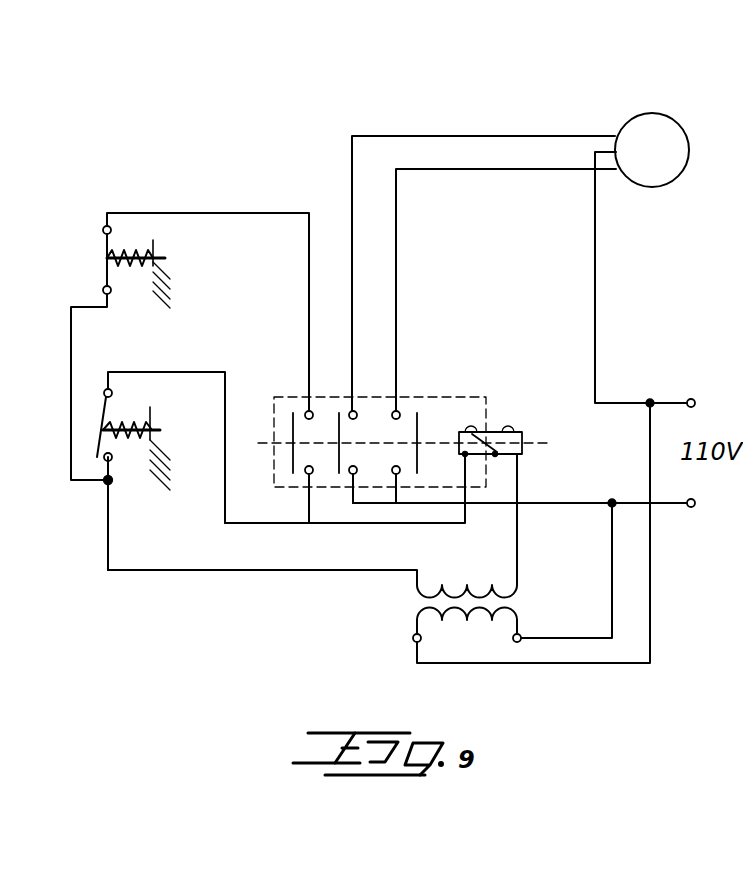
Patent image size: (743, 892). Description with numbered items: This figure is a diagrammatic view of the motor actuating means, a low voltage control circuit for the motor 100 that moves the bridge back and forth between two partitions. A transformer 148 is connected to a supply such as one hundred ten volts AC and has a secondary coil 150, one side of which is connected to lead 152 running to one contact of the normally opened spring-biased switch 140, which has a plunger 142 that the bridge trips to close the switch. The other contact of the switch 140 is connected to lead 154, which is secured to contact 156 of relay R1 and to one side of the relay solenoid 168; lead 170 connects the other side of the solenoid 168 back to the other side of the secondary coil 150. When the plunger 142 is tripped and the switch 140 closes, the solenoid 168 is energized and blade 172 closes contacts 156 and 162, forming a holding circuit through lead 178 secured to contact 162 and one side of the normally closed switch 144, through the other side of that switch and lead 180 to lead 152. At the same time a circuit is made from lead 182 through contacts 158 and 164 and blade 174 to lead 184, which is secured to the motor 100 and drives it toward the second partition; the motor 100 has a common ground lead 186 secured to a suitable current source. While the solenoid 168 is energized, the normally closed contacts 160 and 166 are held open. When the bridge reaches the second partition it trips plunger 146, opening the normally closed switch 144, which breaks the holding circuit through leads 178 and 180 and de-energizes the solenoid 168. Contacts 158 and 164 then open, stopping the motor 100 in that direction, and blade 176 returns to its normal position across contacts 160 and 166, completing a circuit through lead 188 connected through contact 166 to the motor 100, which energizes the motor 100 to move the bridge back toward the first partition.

The motor 100 is at (652, 122).
The normally opened spring-biased switch 140 is at (100, 422).
The plunger 142 is at (150, 430).
The normally closed switch 144 is at (107, 242).
The plunger 146 is at (160, 258).
The transformer 148 is at (521, 607).
The secondary coil 150 is at (492, 590).
The lead 152 is at (222, 571).
The lead 154 is at (240, 525).
The contact 156 is at (312, 473).
The contact 158 is at (356, 473).
The contact 160 is at (399, 473).
The contact 162 is at (311, 412).
The contact 164 is at (355, 412).
The contact 166 is at (398, 412).
The relay solenoid 168 is at (493, 432).
The lead 170 is at (517, 487).
The blade 172 is at (293, 440).
The blade 174 is at (339, 431).
The blade 176 is at (417, 430).
The lead 178 is at (240, 213).
The lead 180 is at (71, 345).
The lead 182 is at (575, 503).
The lead 184 is at (440, 136).
The common ground lead 186 is at (595, 248).
The lead 188 is at (535, 169).
The relay R1 is at (484, 397).